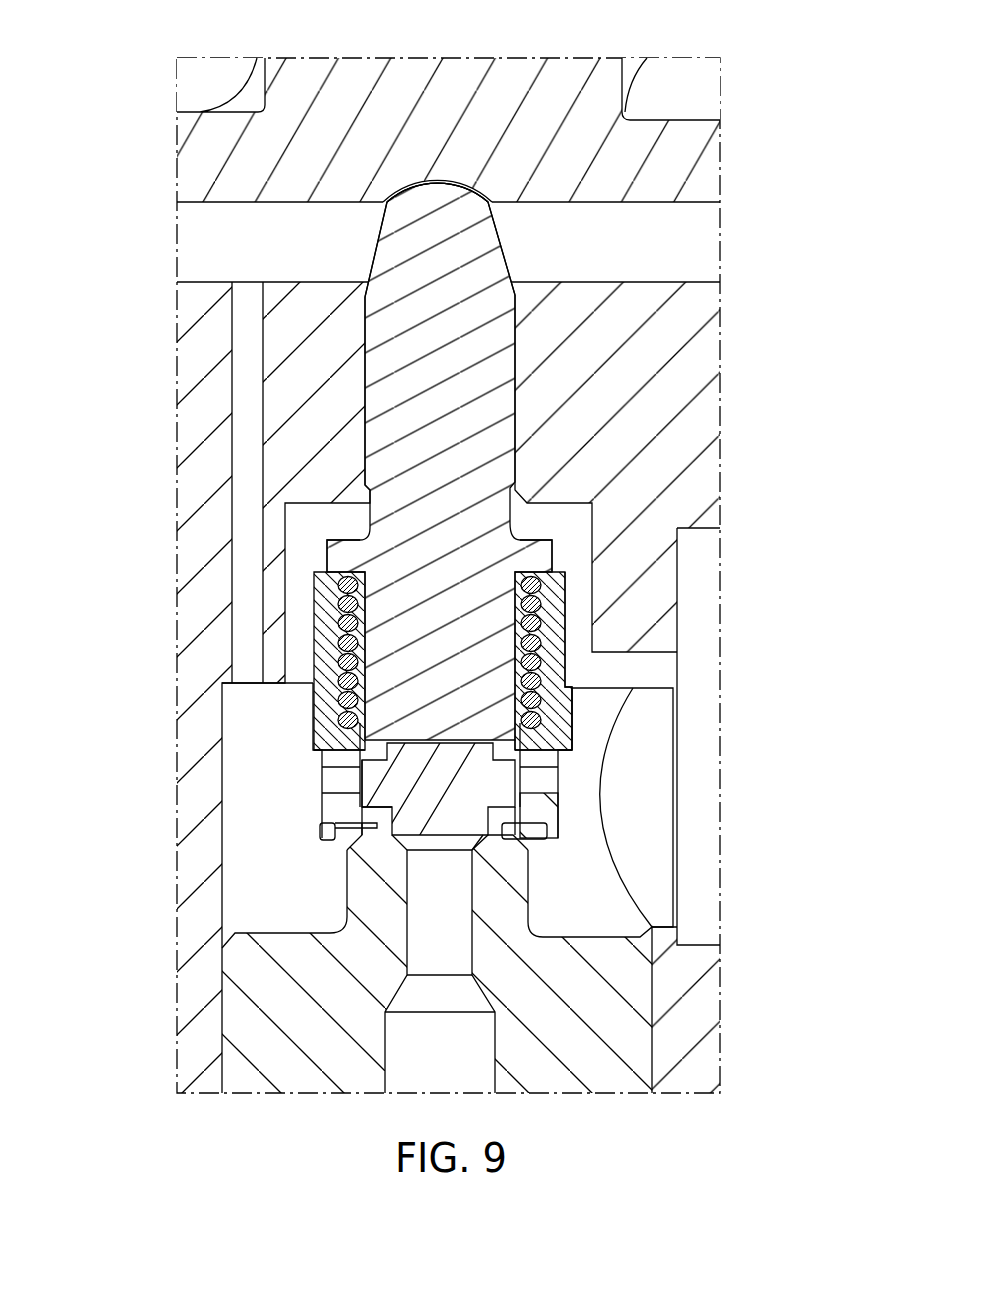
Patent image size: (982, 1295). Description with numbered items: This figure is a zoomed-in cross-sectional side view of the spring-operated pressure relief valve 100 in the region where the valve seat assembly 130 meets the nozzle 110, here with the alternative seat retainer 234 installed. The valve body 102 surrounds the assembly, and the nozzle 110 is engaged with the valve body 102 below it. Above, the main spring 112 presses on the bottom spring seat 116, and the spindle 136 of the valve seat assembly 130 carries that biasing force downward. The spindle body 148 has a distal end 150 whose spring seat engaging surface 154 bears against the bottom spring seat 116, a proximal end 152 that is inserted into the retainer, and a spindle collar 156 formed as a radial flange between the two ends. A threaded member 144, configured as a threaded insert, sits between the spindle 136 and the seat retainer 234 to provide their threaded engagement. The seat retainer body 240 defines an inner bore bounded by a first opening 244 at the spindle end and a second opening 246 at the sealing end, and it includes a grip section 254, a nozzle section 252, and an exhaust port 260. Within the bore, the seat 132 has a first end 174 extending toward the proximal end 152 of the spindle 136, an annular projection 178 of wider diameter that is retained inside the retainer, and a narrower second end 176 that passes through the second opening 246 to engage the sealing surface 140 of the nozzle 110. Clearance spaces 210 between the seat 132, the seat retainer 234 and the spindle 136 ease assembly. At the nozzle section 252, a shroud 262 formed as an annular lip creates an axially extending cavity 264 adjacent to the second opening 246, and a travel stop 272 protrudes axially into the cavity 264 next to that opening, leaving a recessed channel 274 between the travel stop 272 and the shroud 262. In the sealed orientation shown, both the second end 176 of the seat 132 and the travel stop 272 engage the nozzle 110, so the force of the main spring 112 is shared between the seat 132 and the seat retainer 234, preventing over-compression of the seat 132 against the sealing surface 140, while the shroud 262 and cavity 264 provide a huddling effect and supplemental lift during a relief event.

The spring-operated pressure relief valve 100 is at (157, 146).
The valve body 102 is at (208, 330).
The nozzle 110 is at (258, 995).
The main spring 112 is at (190, 88).
The bottom spring seat 116 is at (685, 147).
The valve seat assembly 130 is at (348, 417).
The seat 132 is at (368, 777).
The spindle 136 is at (487, 268).
The sealing surface 140 is at (407, 970).
The threaded member 144 is at (537, 625).
The spindle body 148 is at (517, 388).
The distal end 150 is at (488, 187).
The proximal end 152 is at (522, 740).
The spring seat engaging surface 154 is at (443, 183).
The spindle collar 156 is at (327, 553).
The first end 174 is at (443, 748).
The second end 176 is at (432, 852).
The annular projection 178 is at (362, 790).
The clearance spaces 210 is at (360, 755).
The seat retainer 234 is at (318, 648).
The seat retainer body 240 is at (312, 708).
The first opening 244 is at (523, 570).
The second opening 246 is at (538, 840).
The nozzle section 252 is at (322, 818).
The grip section 254 is at (565, 600).
The exhaust port 260 is at (537, 780).
The shroud 262 is at (317, 833).
The cavity 264 is at (542, 846).
The travel stop 272 is at (372, 830).
The channel 274 is at (514, 842).